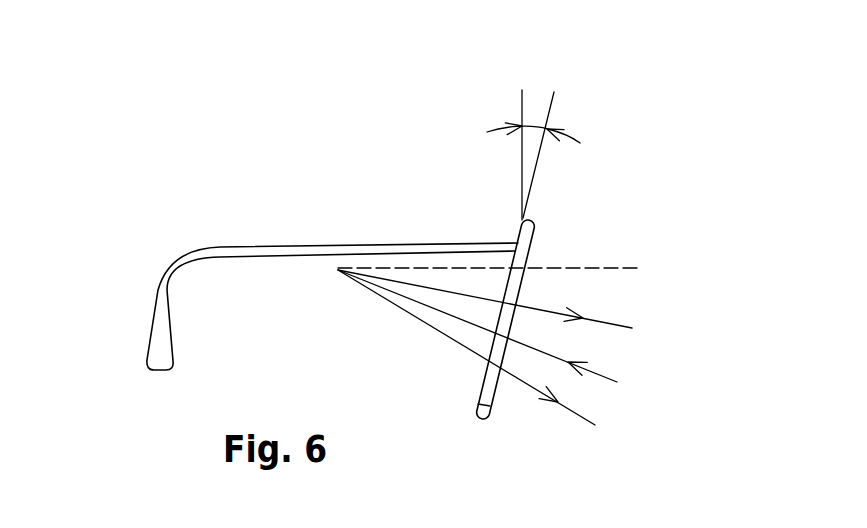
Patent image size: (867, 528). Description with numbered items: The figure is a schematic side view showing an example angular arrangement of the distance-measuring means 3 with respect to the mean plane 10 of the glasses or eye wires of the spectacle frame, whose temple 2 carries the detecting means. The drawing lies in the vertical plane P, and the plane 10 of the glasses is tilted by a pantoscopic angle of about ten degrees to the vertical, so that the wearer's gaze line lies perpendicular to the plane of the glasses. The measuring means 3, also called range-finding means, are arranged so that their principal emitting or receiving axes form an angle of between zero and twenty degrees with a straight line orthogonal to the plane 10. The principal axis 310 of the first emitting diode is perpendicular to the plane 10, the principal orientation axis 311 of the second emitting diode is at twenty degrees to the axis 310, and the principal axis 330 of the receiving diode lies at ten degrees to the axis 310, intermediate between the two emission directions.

The vertical plane P is at (146, 203).
The temple 2 is at (231, 256).
The distance-measuring means 3 is at (550, 240).
The mean plane of the glasses 10 is at (485, 402).
The principal axis of the first emitting diode 310 is at (603, 320).
The principal axis of the receiving diode 330 is at (598, 373).
The principal orientation axis of the second emitting diode 311 is at (580, 413).